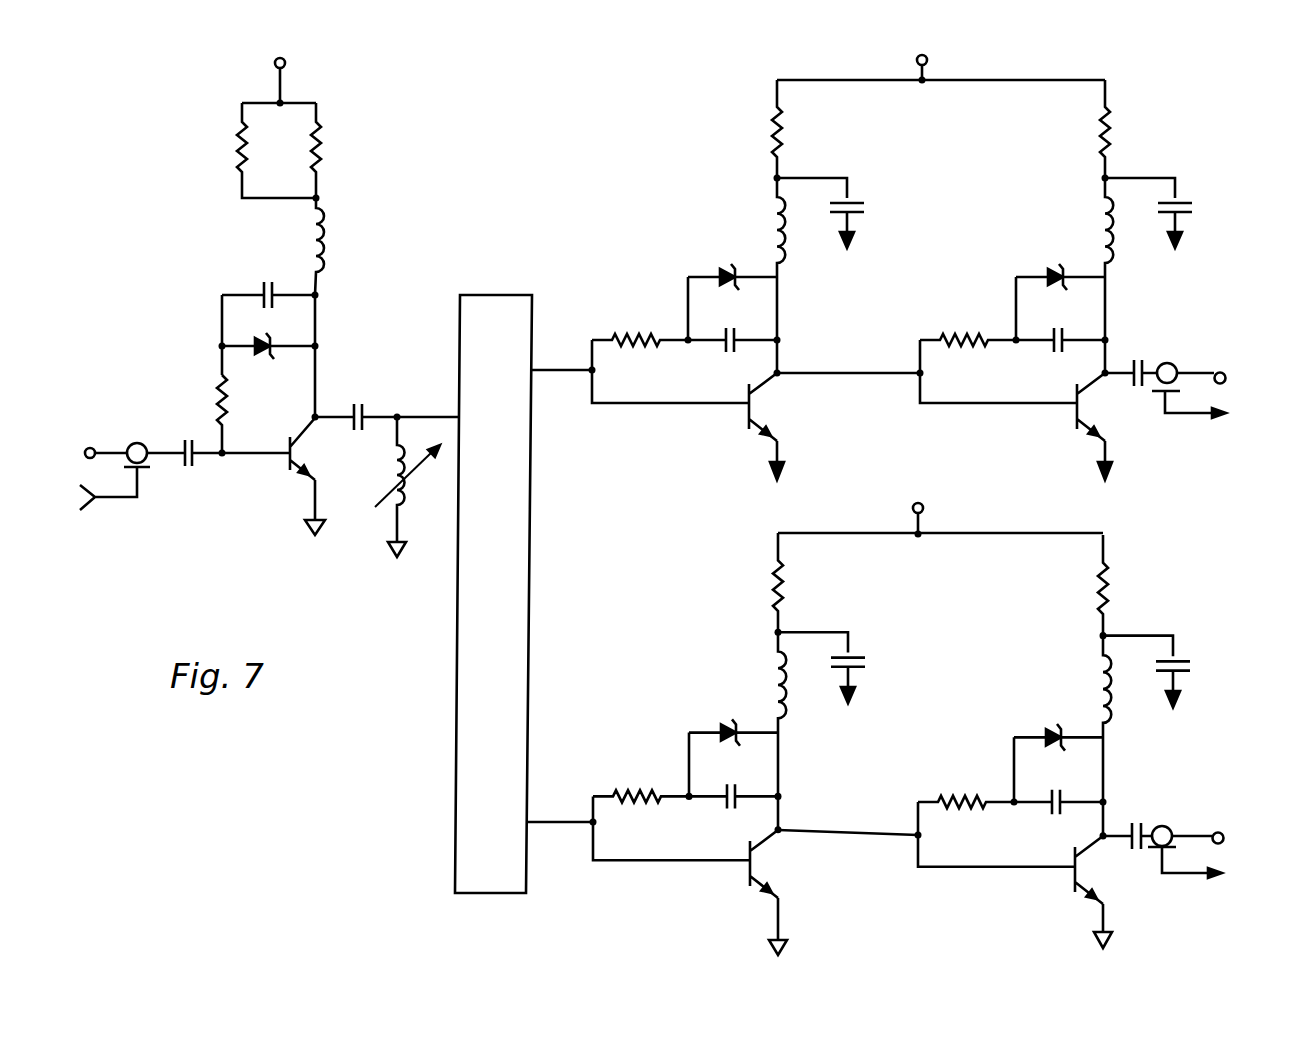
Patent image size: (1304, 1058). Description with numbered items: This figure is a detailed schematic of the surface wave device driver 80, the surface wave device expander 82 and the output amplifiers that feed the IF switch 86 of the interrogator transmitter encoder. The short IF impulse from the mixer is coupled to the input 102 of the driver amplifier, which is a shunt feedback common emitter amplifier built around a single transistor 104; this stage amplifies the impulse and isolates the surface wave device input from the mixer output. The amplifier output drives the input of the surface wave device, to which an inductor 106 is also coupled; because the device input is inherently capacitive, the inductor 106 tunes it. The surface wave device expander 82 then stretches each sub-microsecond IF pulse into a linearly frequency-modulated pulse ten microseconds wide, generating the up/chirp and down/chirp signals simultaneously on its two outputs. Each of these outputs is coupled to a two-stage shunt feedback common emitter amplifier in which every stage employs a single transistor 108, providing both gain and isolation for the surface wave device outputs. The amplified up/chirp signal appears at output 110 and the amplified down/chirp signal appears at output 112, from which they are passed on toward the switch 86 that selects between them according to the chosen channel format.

The surface wave device driver 80 is at (316, 844).
The surface wave device expander 82 is at (518, 594).
The single pole double throw switch 86 is at (906, 501).
The input 102 is at (90, 447).
The transistor 104 is at (318, 452).
The inductor 106 is at (412, 493).
The transistor 108 is at (1092, 408).
The output 110 is at (1221, 384).
The output 112 is at (1219, 844).